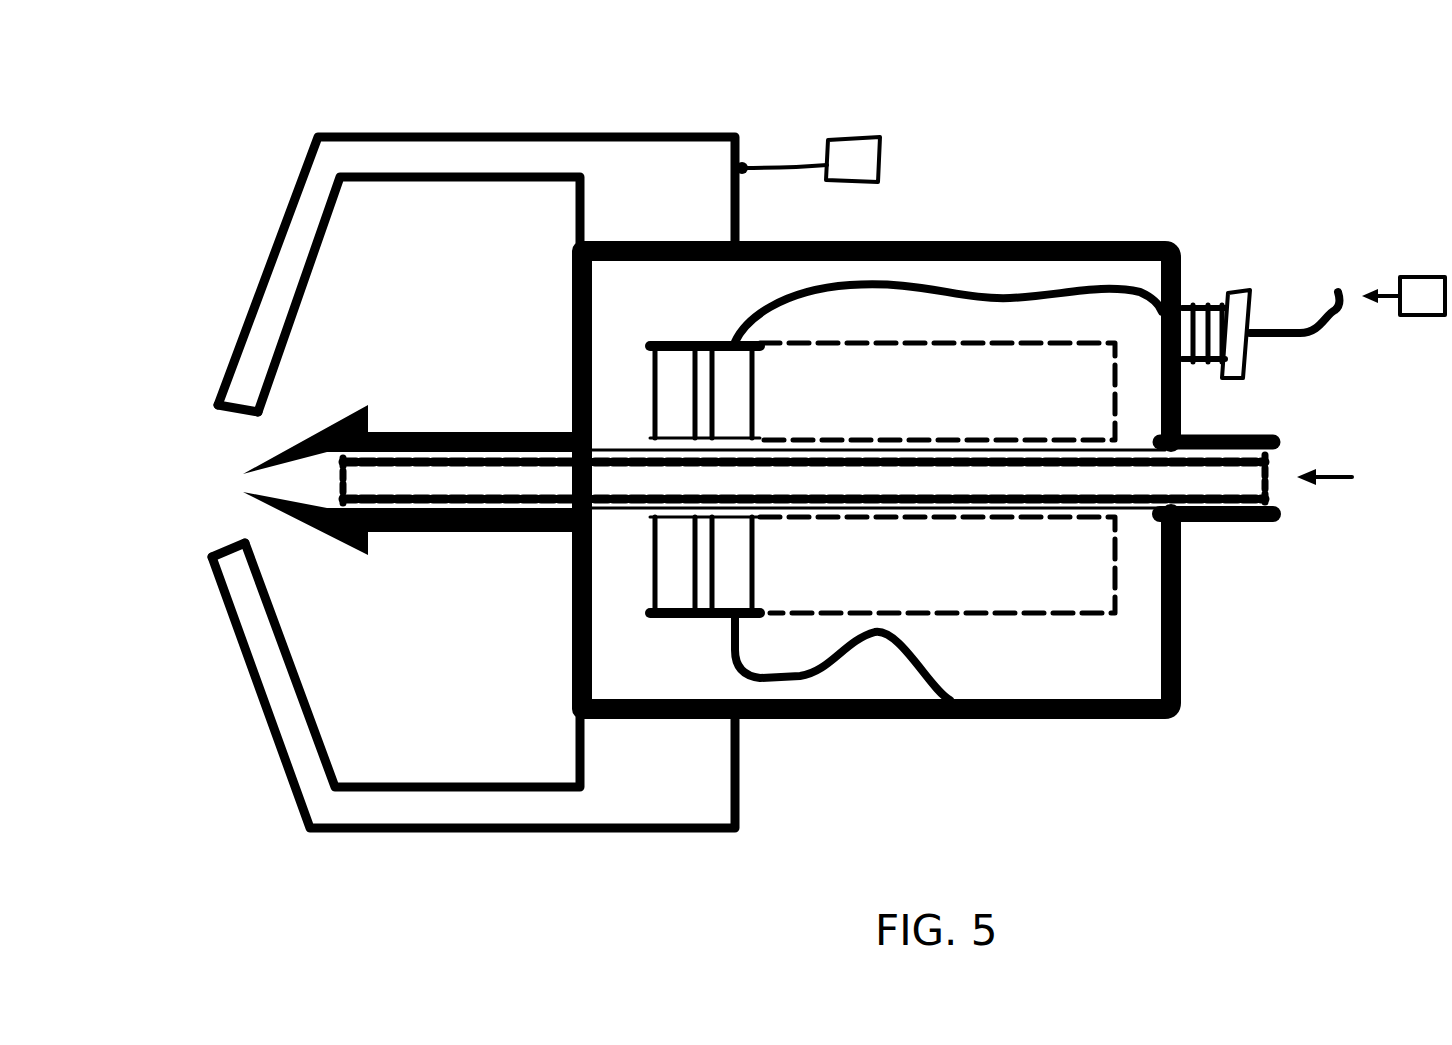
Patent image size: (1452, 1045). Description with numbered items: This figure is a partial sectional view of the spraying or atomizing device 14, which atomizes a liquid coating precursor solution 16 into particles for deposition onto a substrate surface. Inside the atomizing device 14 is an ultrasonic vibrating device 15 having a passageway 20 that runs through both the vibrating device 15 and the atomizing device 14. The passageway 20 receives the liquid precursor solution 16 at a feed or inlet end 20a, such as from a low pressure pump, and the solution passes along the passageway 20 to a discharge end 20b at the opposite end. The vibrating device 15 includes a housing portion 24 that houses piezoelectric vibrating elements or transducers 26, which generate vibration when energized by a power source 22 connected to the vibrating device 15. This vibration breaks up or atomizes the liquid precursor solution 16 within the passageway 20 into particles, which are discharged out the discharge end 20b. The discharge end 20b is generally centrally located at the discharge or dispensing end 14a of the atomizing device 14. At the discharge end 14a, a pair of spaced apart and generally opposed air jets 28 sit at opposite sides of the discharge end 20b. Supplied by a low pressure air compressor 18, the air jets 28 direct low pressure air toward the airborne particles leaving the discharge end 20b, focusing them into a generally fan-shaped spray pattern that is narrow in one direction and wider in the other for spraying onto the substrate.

The atomizing device 14 is at (840, 100).
The discharge end 14a is at (178, 272).
The ultrasonic vibrating device 15 is at (1000, 272).
The liquid precursor solution 16 is at (510, 478).
The low pressure air compressor 18 is at (882, 157).
The passageway 20 is at (1140, 447).
The inlet end 20a is at (1283, 497).
The discharge end 20b is at (308, 527).
The power source 22 is at (1420, 292).
The housing portion 24 is at (1098, 683).
The piezoelectric vibrating elements 26 is at (665, 393).
The air jets 28 is at (225, 393).